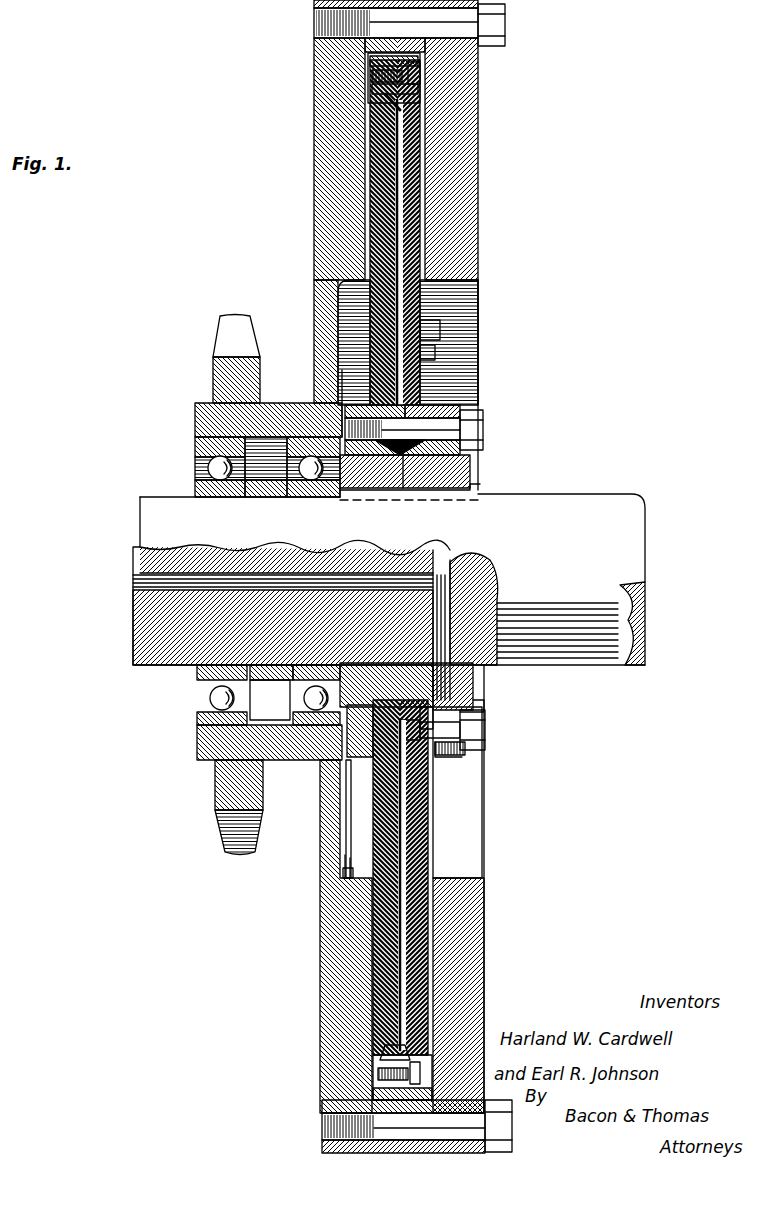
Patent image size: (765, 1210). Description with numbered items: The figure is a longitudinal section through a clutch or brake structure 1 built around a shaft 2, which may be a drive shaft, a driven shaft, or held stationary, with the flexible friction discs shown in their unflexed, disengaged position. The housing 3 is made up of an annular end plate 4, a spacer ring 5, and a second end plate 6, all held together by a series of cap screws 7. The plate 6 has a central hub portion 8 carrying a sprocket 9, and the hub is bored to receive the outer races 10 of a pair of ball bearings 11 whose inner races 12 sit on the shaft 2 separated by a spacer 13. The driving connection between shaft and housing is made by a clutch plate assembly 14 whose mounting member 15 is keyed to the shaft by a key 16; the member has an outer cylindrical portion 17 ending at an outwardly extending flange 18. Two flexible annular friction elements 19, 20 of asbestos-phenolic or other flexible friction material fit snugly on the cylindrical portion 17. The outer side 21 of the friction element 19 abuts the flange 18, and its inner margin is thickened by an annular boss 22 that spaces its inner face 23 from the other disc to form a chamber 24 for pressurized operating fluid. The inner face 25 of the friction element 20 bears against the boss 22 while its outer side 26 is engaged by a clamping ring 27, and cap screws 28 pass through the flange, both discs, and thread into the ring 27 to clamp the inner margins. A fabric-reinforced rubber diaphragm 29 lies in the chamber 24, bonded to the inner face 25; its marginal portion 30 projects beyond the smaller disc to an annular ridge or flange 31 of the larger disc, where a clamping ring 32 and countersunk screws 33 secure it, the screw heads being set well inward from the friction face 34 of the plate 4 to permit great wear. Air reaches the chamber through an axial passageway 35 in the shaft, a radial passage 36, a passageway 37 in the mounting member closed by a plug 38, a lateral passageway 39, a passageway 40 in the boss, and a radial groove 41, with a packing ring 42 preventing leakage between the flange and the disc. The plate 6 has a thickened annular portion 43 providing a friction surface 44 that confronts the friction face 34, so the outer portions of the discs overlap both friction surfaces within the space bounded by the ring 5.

The clutch or brake structure 1 is at (480, 355).
The shaft 2 is at (570, 510).
The housing 3 is at (478, 200).
The annular end plate 4 is at (482, 922).
The spacer ring 5 is at (393, 1150).
The second end plate 6 is at (322, 996).
The cap screws 7 is at (498, 22).
The central hub portion 8 is at (298, 755).
The sprocket 9 is at (228, 836).
The outer races 10 is at (200, 714).
The ball bearings 11 is at (306, 482).
The inner races 12 is at (328, 488).
The spacer 13 is at (262, 672).
The clutch plate assembly 14 is at (433, 828).
The mounting member 15 is at (470, 462).
The key 16 is at (484, 488).
The outer cylindrical portion 17 is at (405, 455).
The flange 18 is at (432, 405).
The friction element 19 is at (424, 332).
The friction element 20 is at (370, 333).
The outer side 21 is at (470, 297).
The annular boss 22 is at (375, 398).
The inner face 23 is at (424, 352).
The chamber 24 is at (420, 100).
The inner face 25 is at (383, 788).
The outer side 26 is at (372, 850).
The clamping ring 27 is at (342, 398).
The cap screws 28 is at (484, 428).
The diaphragm 29 is at (395, 242).
The marginal portion 30 is at (370, 62).
The annular ridge or flange 31 is at (420, 76).
The clamping ring 32 is at (372, 88).
The countersunk screws 33 is at (372, 78).
The friction face 34 is at (408, 168).
The axial passageway 35 is at (143, 583).
The radial passage 36 is at (462, 606).
The passageway 37 is at (458, 690).
The plug 38 is at (455, 756).
The lateral passageway 39 is at (440, 760).
The passageway 40 is at (412, 729).
The radial groove 41 is at (372, 762).
The packing ring 42 is at (430, 720).
The thickened annular portion 43 is at (342, 878).
The friction surface 44 is at (378, 924).